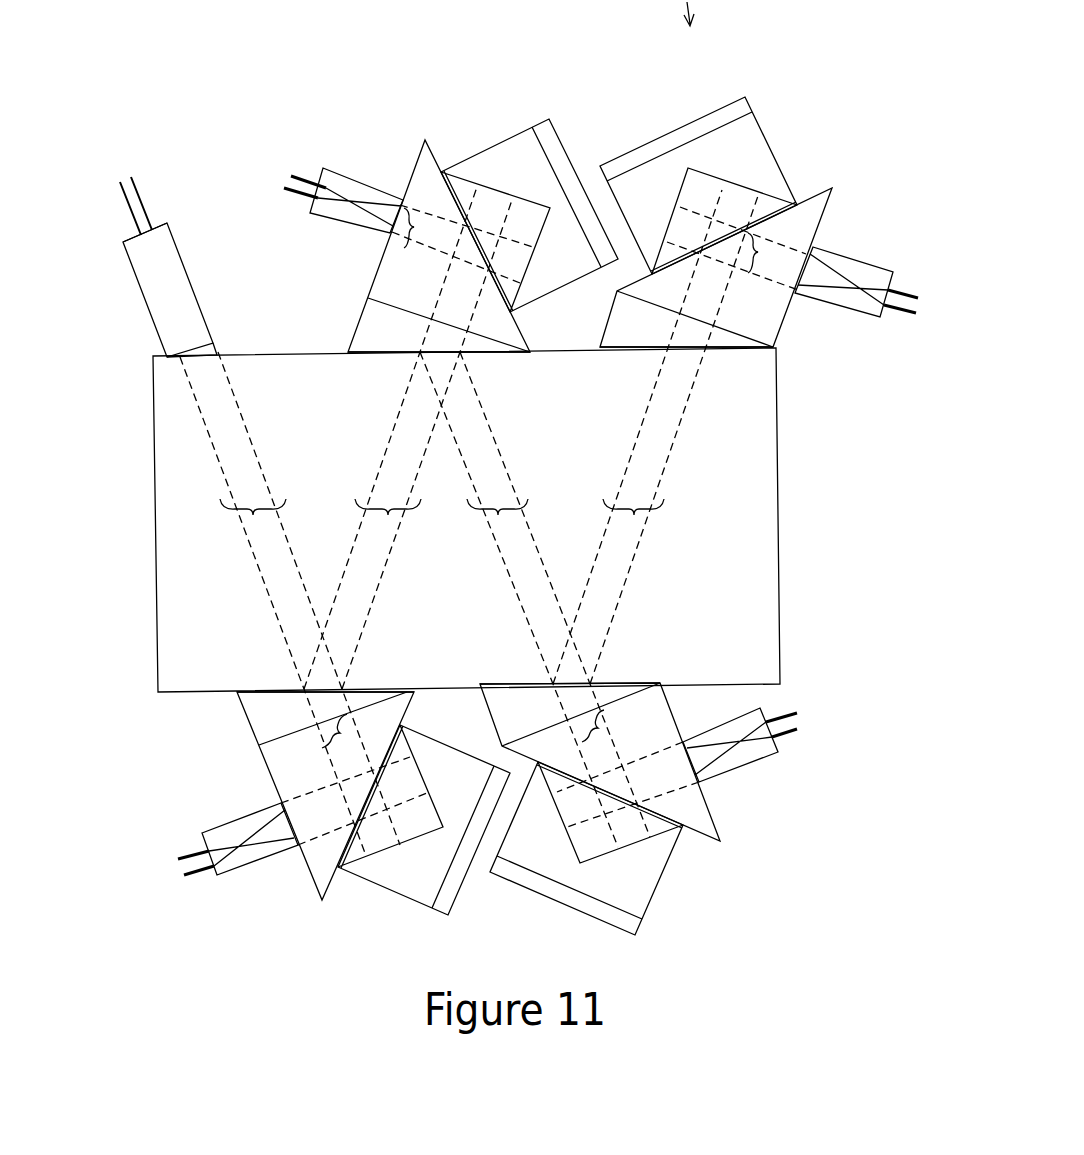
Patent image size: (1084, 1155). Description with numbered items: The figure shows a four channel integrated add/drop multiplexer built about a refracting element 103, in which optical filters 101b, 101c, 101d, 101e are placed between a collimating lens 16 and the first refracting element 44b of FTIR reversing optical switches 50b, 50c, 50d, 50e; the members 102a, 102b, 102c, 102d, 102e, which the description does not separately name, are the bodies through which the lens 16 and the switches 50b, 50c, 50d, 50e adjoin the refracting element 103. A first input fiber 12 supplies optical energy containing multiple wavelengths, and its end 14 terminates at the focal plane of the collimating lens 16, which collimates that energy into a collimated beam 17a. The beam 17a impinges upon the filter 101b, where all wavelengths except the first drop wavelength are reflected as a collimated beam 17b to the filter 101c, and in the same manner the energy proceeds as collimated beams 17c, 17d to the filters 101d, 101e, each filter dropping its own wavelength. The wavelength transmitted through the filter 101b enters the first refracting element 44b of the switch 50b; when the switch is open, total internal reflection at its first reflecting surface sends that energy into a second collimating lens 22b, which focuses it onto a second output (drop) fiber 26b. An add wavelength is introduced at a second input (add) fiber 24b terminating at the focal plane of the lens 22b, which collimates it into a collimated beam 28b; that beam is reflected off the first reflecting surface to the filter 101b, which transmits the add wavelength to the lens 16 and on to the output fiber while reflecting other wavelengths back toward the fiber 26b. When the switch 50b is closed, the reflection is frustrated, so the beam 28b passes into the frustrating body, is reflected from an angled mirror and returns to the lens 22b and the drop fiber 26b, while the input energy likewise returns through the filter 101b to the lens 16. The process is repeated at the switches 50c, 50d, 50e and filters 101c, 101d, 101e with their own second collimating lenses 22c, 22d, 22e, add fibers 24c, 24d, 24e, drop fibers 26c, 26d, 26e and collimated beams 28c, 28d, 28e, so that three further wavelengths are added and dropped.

The first input fiber 12 is at (137, 190).
The fiber input end 14 is at (122, 237).
The collimating lens 16 is at (140, 290).
The collimated beam 17a is at (290, 602).
The collimated beam 17b is at (408, 438).
The collimated beam 17c is at (535, 599).
The collimated beam 17d is at (656, 437).
The second collimating lens 22b is at (237, 873).
The second collimating lens 22c is at (330, 170).
The second collimating lens 22d is at (717, 778).
The second collimating lens 22e is at (833, 248).
The second input (add) fiber 24b is at (190, 873).
The second input (add) fiber 24c is at (296, 176).
The second input (add) fiber 24d is at (782, 736).
The second input (add) fiber 24e is at (912, 297).
The second output (drop) fiber 26b is at (194, 845).
The second output (drop) fiber 26c is at (302, 195).
The second output (drop) fiber 26d is at (768, 717).
The second output (drop) fiber 26e is at (900, 312).
The collimated beam 28b is at (354, 779).
The collimated beam 28c is at (462, 244).
The collimated beam 28d is at (628, 768).
The collimated beam 28e is at (736, 248).
The first refracting element 44b is at (290, 767).
The FTIR reversing optical switch 50b is at (327, 882).
The FTIR reversing optical switch 50c is at (443, 170).
The FTIR reversing optical switch 50d is at (700, 833).
The FTIR reversing optical switch 50e is at (835, 197).
The optical filter 101b is at (277, 688).
The optical filter 101c is at (393, 354).
The optical filter 101d is at (617, 690).
The optical filter 101e is at (748, 350).
The wedge a 102a is at (220, 353).
The prism b 102b is at (267, 730).
The prism c 102c is at (378, 323).
The prism d 102d is at (607, 692).
The prism e 102e is at (717, 337).
The refracting element 103 is at (777, 500).